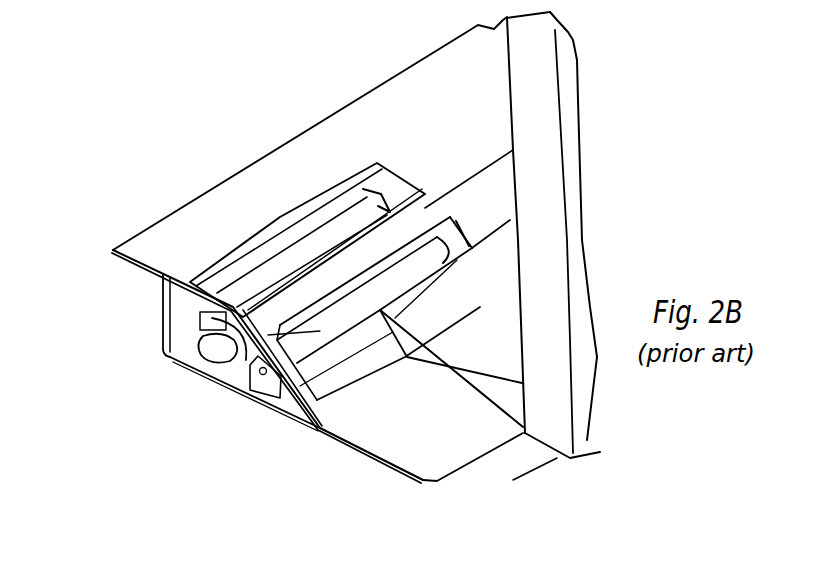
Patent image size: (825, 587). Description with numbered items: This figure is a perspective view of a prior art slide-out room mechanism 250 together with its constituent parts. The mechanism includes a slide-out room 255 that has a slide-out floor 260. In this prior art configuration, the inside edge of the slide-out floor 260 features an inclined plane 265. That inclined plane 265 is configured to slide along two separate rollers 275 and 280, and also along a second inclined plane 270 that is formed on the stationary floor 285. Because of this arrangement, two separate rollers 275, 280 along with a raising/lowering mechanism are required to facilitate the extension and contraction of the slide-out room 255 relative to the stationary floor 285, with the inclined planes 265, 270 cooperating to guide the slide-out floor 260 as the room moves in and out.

The slide-out room mechanism 250 is at (722, 162).
The slide-out room 255 is at (545, 131).
The slide-out floor 260 is at (433, 347).
The inclined plane 265 is at (440, 358).
The inclined plane 270 is at (263, 400).
The roller 275 is at (245, 372).
The roller 280 is at (236, 286).
The stationary floor 285 is at (282, 182).